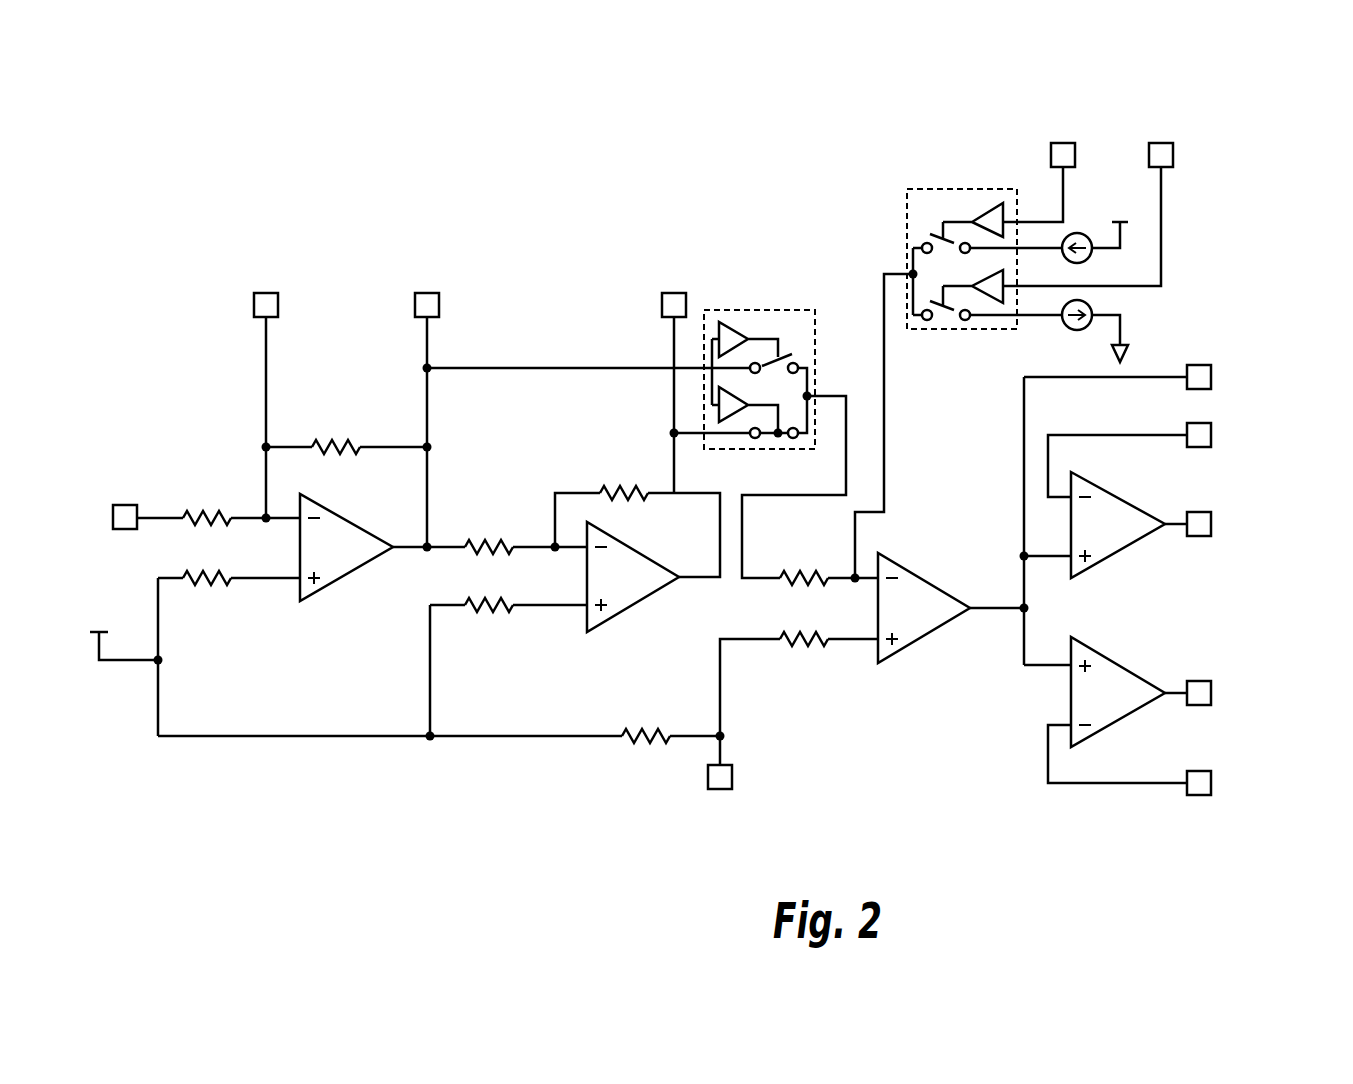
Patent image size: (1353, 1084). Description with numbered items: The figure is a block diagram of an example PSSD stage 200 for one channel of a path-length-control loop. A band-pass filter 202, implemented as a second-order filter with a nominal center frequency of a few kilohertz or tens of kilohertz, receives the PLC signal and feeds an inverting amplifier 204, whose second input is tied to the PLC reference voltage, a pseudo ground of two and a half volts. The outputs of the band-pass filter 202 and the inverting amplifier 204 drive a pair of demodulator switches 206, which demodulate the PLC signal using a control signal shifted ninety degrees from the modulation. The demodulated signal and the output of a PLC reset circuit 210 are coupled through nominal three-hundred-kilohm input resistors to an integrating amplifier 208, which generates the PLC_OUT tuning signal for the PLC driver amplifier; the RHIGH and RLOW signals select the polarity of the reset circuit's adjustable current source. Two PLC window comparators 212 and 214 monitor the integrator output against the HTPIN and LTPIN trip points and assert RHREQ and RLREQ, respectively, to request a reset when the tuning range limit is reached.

The PSSD stage 200 is at (1226, 183).
The band-pass filter 202 is at (348, 518).
The inverting amplifier 204 is at (648, 596).
The demodulator switches 206 is at (775, 310).
The integrating amplifier 208 is at (925, 580).
The PLC reset circuit 210 is at (942, 189).
The PLC window comparator 212 is at (1129, 503).
The PLC window comparator 214 is at (1129, 671).